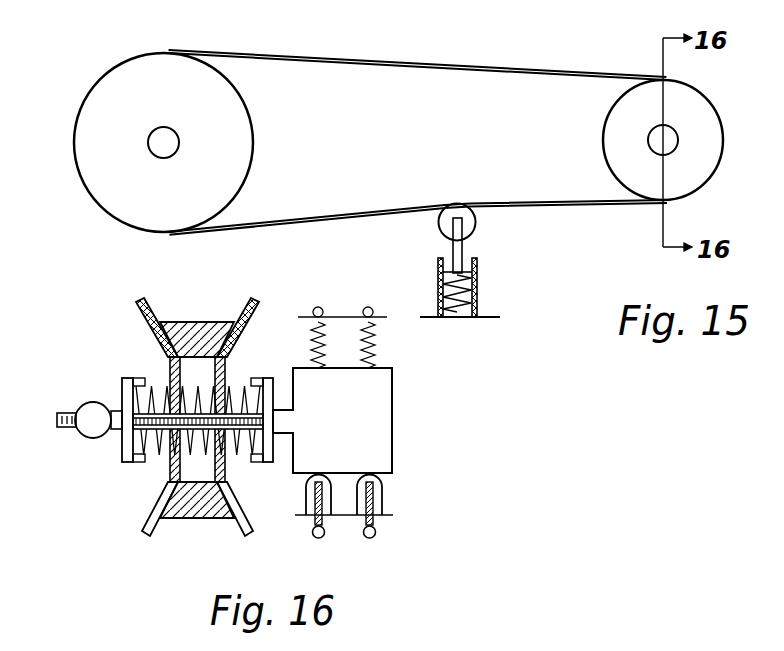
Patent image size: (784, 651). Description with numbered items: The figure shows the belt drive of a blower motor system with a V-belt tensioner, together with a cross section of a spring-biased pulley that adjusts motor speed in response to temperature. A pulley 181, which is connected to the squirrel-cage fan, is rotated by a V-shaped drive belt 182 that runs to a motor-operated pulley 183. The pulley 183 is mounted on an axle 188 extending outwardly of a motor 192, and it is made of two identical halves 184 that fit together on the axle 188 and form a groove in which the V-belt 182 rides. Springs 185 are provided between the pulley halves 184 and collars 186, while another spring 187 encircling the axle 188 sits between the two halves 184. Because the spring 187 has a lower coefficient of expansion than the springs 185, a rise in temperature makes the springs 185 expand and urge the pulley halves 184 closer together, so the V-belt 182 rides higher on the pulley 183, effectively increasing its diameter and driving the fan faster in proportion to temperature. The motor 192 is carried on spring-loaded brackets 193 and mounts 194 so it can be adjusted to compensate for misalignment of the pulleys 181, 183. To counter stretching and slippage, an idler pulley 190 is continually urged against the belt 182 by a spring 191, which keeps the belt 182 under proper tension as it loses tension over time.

In FIG. 15, the pulley 181 is at (98, 182).
In FIG. 15, the V-shaped drive belt 182 is at (418, 68).
In FIG. 16, the V-shaped drive belt 182 is at (185, 327).
In FIG. 15, the motor-operated pulley 183 is at (713, 125).
In FIG. 16, the pulley halves 184 is at (132, 307).
In FIG. 16, the springs 185 is at (172, 388).
In FIG. 16, the collars 186 is at (123, 450).
In FIG. 16, the spring 187 is at (172, 448).
In FIG. 15, the axle 188 is at (650, 140).
In FIG. 16, the axle 188 is at (62, 428).
In FIG. 15, the idler pulley 190 is at (475, 222).
In FIG. 15, the spring 191 is at (477, 290).
In FIG. 16, the motor 192 is at (382, 428).
In FIG. 16, the spring-loaded brackets 193 is at (312, 336).
In FIG. 16, the mounts 194 is at (380, 498).